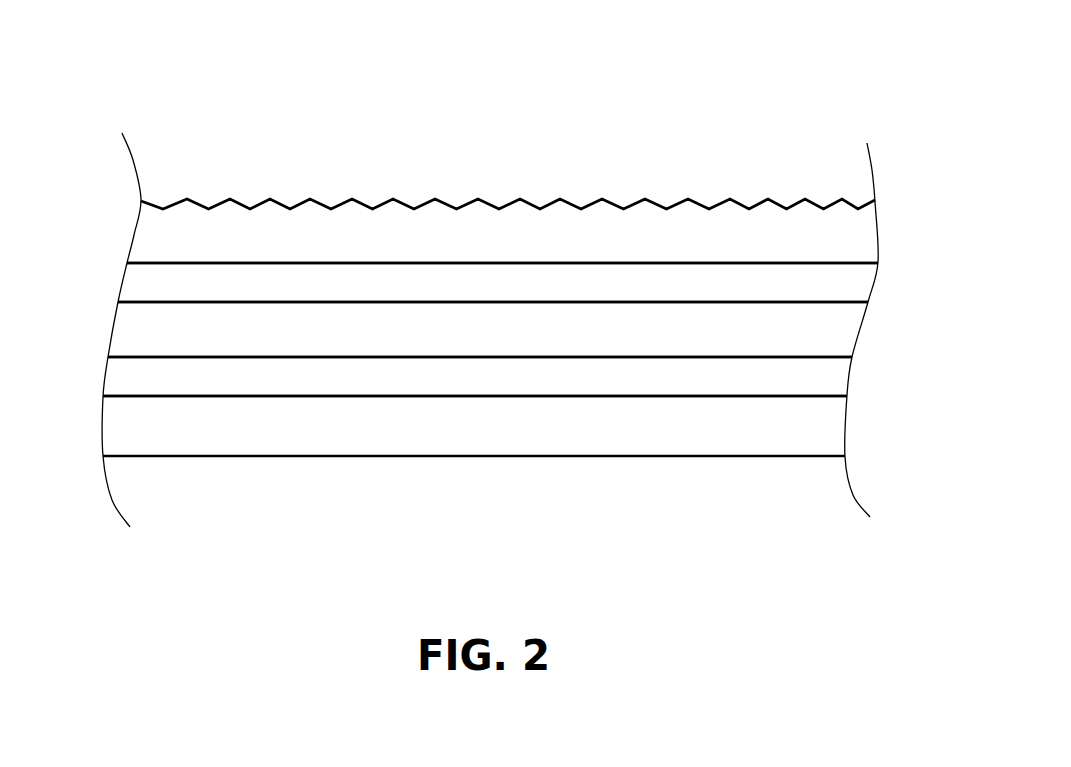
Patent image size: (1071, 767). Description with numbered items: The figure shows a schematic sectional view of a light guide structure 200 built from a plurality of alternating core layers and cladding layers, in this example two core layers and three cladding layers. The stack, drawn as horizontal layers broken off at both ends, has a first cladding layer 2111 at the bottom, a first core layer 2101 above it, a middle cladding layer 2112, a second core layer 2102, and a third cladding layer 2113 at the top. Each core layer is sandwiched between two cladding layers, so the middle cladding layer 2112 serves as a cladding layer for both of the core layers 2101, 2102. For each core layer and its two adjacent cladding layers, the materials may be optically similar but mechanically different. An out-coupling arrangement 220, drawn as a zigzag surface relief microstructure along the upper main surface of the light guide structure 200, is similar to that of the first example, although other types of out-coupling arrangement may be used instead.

The light guide structure 200 is at (227, 114).
The out-coupling arrangement 220 is at (612, 162).
The cladding layer 2113 is at (863, 232).
The core layer 2102 is at (858, 282).
The cladding layer 2112 is at (840, 329).
The core layer 2101 is at (837, 373).
The cladding layer 2111 is at (828, 422).